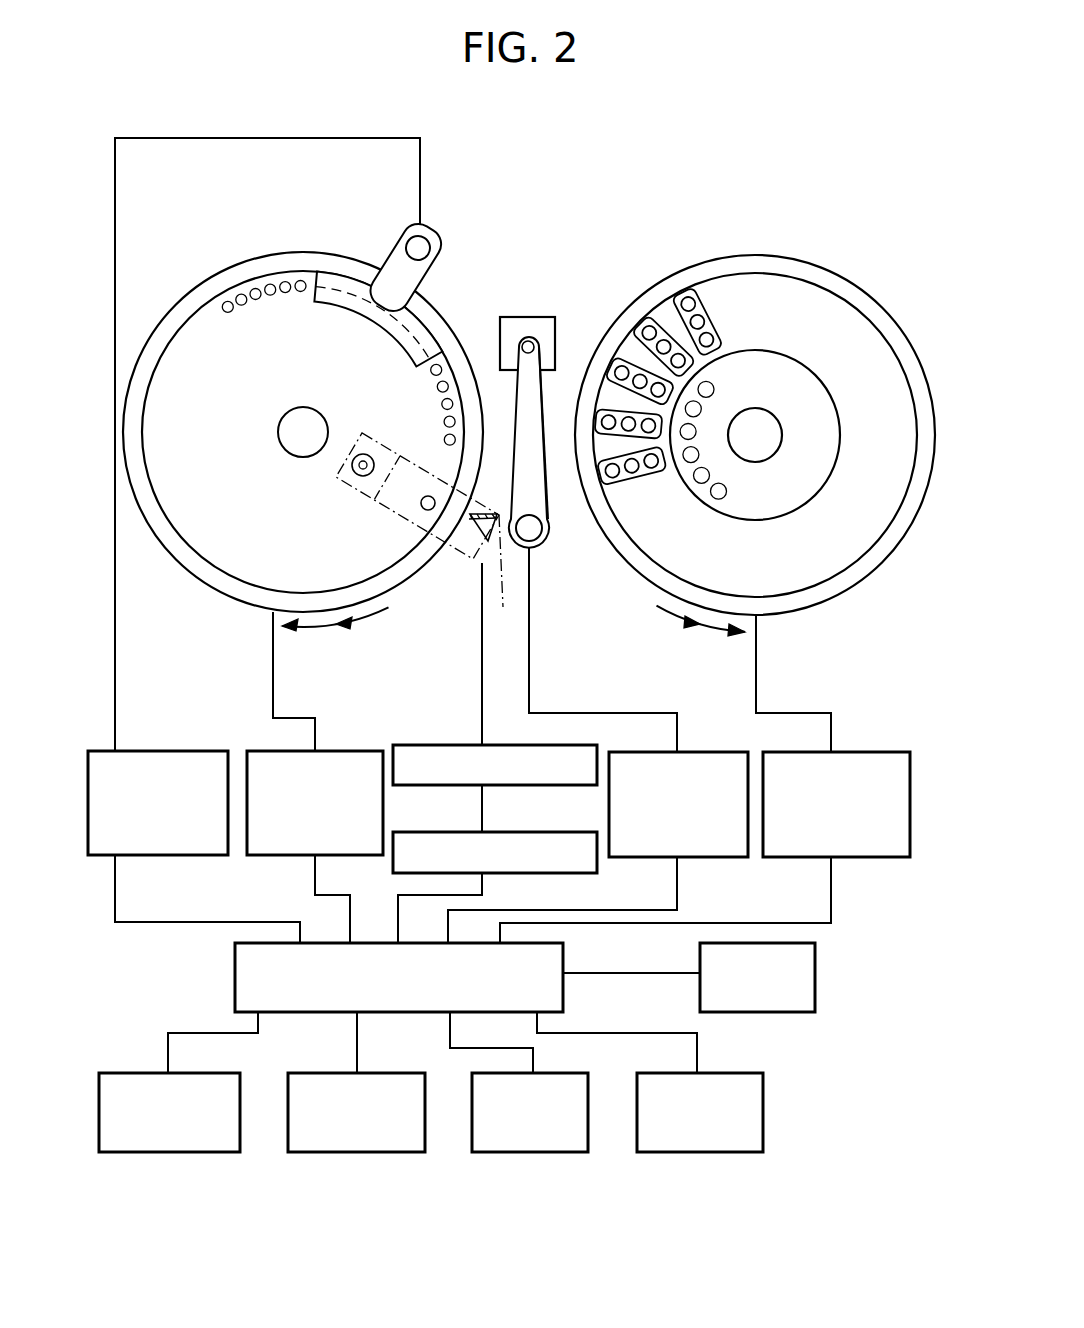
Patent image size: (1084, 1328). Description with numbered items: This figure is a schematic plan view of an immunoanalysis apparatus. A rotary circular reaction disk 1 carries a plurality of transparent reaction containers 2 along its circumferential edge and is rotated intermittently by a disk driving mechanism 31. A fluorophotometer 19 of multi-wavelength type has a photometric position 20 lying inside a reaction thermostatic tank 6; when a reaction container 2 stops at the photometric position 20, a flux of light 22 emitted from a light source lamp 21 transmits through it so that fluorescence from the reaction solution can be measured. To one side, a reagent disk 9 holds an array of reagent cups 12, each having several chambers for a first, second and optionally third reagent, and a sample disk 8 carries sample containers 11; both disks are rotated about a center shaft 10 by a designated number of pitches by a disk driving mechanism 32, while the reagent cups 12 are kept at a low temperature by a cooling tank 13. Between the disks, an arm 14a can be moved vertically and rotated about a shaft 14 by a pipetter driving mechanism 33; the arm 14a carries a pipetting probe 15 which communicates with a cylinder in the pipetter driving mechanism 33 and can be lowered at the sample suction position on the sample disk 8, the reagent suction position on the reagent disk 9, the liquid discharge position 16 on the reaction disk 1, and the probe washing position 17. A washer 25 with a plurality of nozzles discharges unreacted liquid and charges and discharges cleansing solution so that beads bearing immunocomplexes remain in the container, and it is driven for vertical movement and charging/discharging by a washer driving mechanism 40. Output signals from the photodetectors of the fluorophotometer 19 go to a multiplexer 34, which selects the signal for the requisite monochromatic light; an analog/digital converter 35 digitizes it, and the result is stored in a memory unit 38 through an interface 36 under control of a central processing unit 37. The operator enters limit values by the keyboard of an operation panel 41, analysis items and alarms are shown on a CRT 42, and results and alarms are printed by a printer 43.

The reaction disk 1 is at (188, 302).
The reaction containers 2 is at (248, 292).
The reaction thermostatic tank 6 is at (212, 600).
The sample disk 8 is at (822, 488).
The reagent disk 9 is at (848, 300).
The center shaft 10 is at (762, 460).
The sample container 11 is at (716, 390).
The reagent cups 12 is at (640, 482).
The cooling tank 13 is at (790, 612).
The shaft 14 is at (548, 530).
The arm 14a is at (548, 392).
The pipetting probe 15 is at (528, 341).
The liquid discharge position 16 is at (440, 352).
The probe washing position 17 is at (500, 322).
The fluorophotometer 19 is at (490, 565).
The photometric position 20 is at (430, 512).
The light source lamp 21 is at (352, 470).
The flux of light 22 is at (386, 508).
The washer 25 is at (338, 283).
The disk driving mechanism 31 is at (345, 751).
The disk driving mechanism 32 is at (870, 752).
The pipetter driving mechanism 33 is at (705, 752).
The multiplexer 34 is at (445, 745).
The analog/digital converter 35 is at (455, 832).
The interface 36 is at (235, 975).
The central processing unit 37 is at (815, 975).
The memory unit 38 is at (690, 1152).
The washer driving mechanism 40 is at (205, 751).
The operation panel 41 is at (150, 1152).
The CRT 42 is at (500, 1152).
The printer 43 is at (333, 1152).